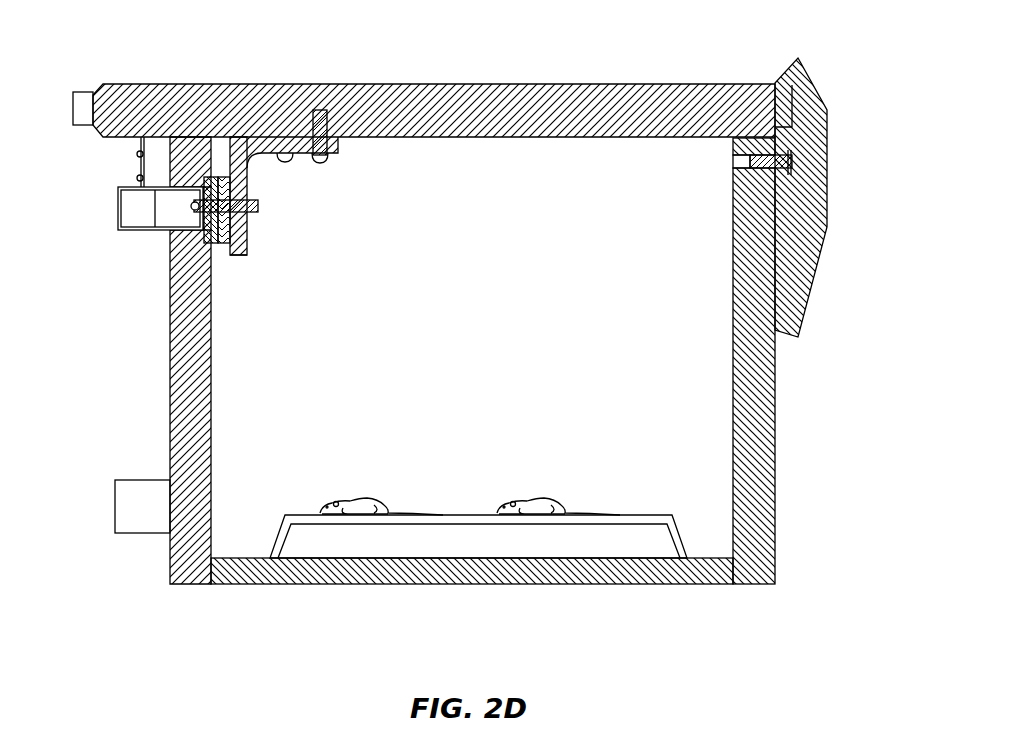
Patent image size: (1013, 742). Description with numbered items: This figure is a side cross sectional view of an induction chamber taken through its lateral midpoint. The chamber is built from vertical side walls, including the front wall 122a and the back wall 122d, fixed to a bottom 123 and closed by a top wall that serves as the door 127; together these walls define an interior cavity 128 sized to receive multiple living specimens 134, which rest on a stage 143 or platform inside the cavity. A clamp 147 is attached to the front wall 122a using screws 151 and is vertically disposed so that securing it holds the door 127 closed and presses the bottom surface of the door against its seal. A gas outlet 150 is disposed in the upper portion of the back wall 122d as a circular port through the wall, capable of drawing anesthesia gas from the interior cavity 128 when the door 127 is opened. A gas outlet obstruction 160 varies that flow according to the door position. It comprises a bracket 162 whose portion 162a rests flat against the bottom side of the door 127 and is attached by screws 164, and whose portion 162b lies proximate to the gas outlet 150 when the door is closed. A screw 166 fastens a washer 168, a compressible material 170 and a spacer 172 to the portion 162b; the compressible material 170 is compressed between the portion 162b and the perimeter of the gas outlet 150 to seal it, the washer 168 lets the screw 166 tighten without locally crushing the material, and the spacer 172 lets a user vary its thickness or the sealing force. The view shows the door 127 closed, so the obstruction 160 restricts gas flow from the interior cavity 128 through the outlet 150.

The door 127 is at (579, 87).
The back wall 122d is at (182, 405).
The front wall 122a is at (750, 402).
The bottom 123 is at (640, 578).
The clamp 147 is at (808, 228).
The screws 151 is at (792, 162).
The bracket 162 is at (237, 138).
The portion of bracket 162a is at (290, 137).
The portion of bracket 162b is at (250, 262).
The screws 164 is at (328, 112).
The spacer 172 is at (207, 173).
The gas outlet 150 is at (125, 202).
The screw 166 is at (192, 206).
The washer 168 is at (193, 216).
The compressible material 170 is at (188, 252).
The gas outlet obstruction 160 is at (312, 220).
The interior cavity 128 is at (563, 300).
The stage 143 is at (468, 522).
The living specimens 134 is at (356, 520).